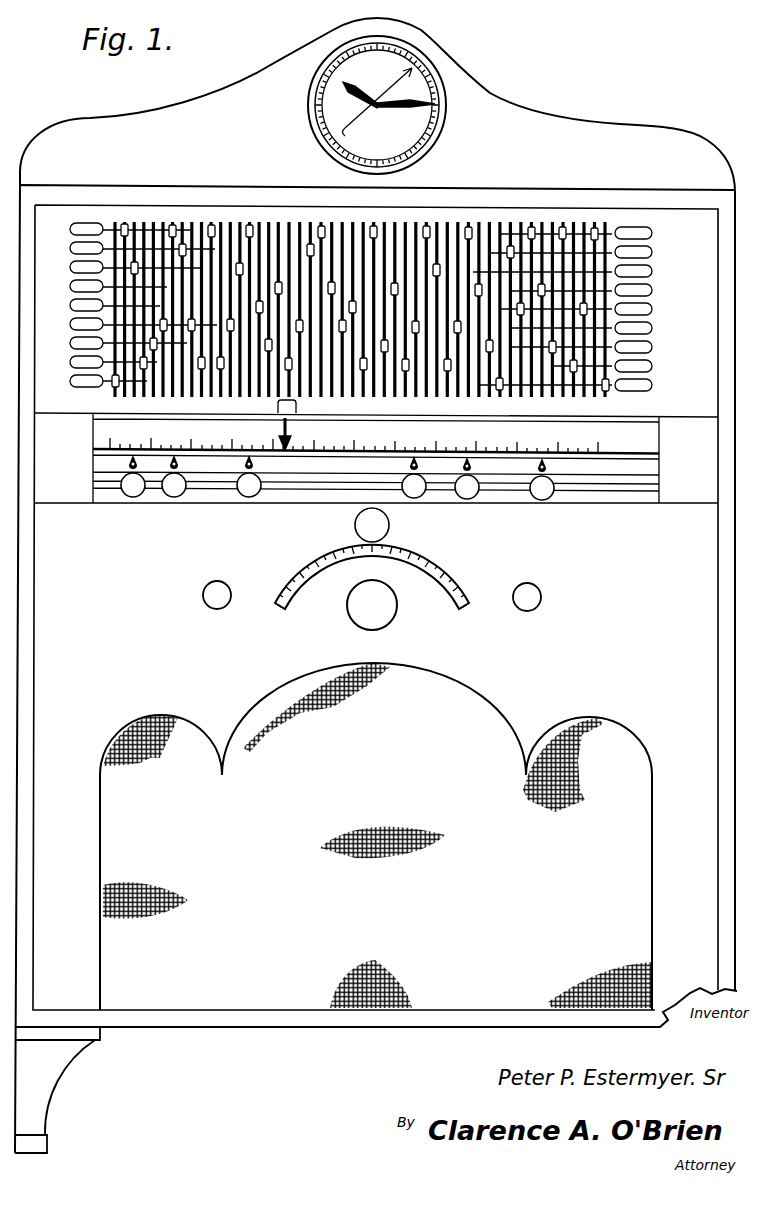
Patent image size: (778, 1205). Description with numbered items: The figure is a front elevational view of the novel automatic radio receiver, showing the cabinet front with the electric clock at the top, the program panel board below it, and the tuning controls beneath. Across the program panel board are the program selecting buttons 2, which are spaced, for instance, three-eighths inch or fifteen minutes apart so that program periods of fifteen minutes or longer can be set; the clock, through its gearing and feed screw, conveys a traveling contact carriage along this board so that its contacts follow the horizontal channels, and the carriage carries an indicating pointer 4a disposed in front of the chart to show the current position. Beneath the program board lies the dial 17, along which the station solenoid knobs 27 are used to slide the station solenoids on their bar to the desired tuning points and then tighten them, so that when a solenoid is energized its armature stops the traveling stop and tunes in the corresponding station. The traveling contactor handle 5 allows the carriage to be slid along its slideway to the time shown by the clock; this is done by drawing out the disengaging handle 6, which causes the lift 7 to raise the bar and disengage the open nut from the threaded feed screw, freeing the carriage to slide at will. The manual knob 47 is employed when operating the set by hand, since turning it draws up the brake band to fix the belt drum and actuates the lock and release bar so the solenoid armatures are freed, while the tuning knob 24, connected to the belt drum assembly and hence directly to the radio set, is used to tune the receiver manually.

The dial 17 is at (417, 90).
The program selecting buttons 2 is at (597, 228).
The lift 7 is at (690, 287).
The traveling contactor handle 5 is at (270, 413).
The disengaging handle 6 is at (300, 406).
The indicating pointer 4a is at (293, 442).
The station solenoid knobs 27 is at (548, 530).
The manual knob 47 is at (447, 547).
The tuning knob 24 is at (443, 640).